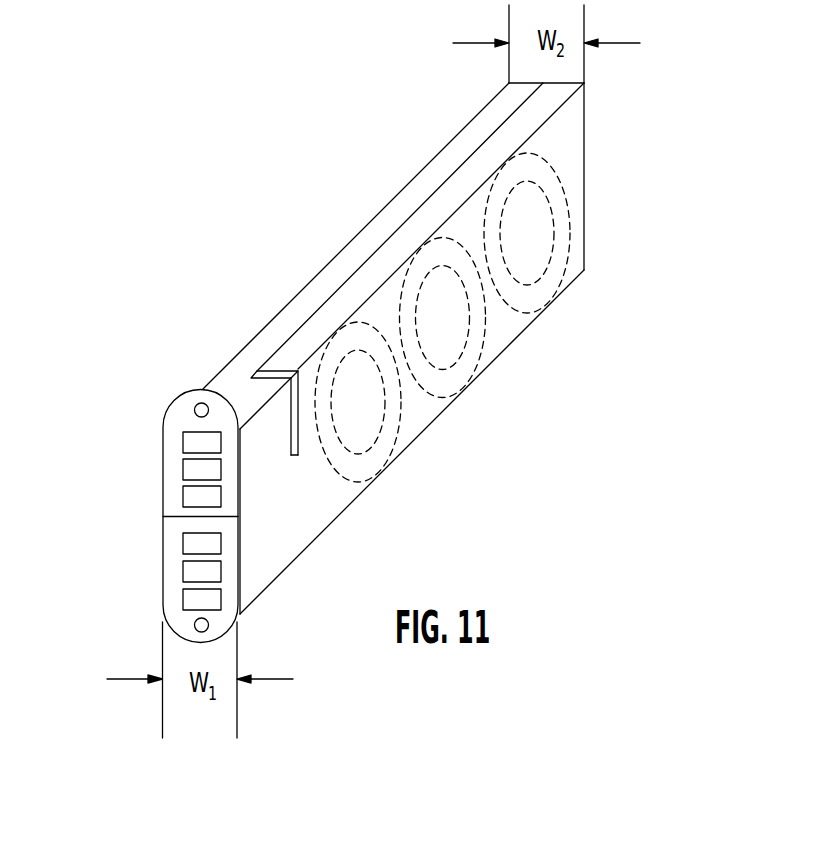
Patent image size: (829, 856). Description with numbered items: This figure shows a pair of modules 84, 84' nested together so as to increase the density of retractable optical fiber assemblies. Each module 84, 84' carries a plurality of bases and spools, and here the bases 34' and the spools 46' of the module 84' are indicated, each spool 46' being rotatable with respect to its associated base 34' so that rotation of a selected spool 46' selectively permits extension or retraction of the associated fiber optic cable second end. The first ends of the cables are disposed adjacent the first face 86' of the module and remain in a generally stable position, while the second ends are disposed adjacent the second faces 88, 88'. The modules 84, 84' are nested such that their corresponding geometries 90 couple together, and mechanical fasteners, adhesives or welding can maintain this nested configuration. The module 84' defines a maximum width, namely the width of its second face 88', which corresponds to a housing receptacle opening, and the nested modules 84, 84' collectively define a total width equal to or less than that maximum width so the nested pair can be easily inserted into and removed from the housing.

The module 84 is at (372, 256).
The module 84' is at (412, 442).
The first face 86' is at (623, 176).
The second face 88 is at (148, 453).
The second face 88' is at (163, 580).
The corresponding geometries 90 is at (290, 455).
The base 34' is at (465, 338).
The spool 46' is at (481, 331).